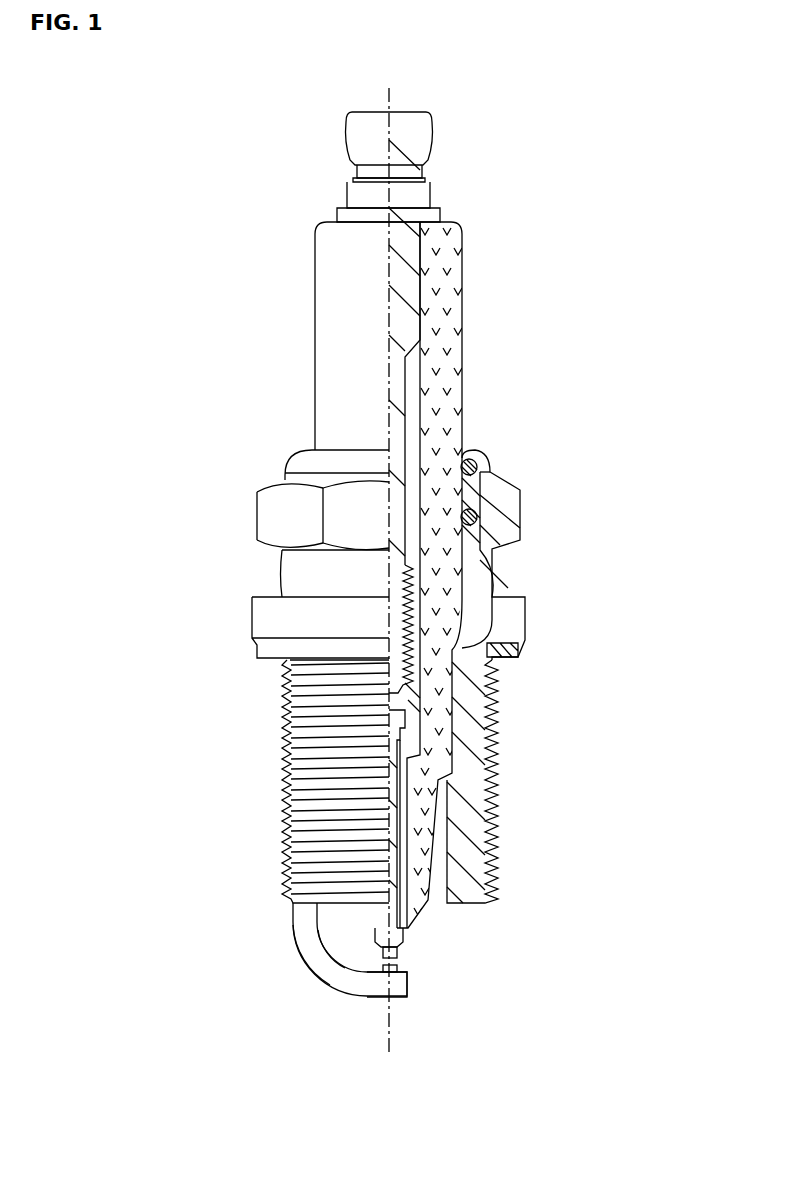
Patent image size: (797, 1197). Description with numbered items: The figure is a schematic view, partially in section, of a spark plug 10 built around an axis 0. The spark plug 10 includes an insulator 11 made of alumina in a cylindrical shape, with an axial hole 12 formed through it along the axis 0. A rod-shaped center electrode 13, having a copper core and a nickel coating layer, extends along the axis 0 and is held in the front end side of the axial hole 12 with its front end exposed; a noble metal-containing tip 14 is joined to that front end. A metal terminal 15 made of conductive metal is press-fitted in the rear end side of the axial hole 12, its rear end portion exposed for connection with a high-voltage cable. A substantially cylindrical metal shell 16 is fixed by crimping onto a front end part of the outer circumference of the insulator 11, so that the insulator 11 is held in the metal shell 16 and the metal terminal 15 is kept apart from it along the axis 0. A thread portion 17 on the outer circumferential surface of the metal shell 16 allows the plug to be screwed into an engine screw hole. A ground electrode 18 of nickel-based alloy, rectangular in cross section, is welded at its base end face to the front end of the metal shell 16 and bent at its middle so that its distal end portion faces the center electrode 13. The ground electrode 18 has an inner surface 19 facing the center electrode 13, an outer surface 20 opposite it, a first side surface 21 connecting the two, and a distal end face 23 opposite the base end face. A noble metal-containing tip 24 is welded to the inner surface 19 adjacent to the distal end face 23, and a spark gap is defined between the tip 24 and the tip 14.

The axis 0 is at (392, 88).
The spark plug 10 is at (582, 161).
The insulator 11 is at (450, 396).
The axial hole 12 is at (422, 248).
The center electrode 13 is at (405, 937).
The noble metal-containing tip 14 is at (399, 953).
The metal terminal 15 is at (367, 140).
The metal shell 16 is at (270, 606).
The thread portion 17 is at (287, 780).
The ground electrode 18 is at (254, 1015).
The inner surface 19 is at (362, 958).
The outer surface 20 is at (305, 962).
The first side surface 21 is at (330, 975).
The distal end face 23 is at (408, 983).
The noble metal-containing tip 24 is at (399, 969).